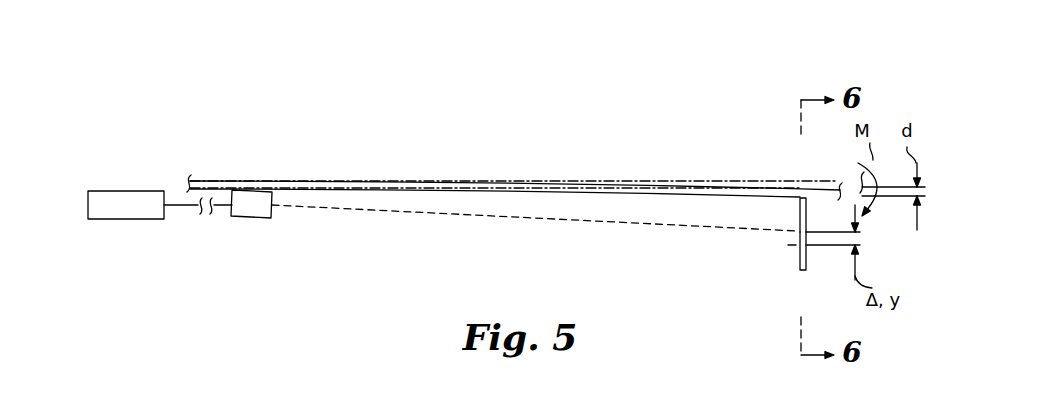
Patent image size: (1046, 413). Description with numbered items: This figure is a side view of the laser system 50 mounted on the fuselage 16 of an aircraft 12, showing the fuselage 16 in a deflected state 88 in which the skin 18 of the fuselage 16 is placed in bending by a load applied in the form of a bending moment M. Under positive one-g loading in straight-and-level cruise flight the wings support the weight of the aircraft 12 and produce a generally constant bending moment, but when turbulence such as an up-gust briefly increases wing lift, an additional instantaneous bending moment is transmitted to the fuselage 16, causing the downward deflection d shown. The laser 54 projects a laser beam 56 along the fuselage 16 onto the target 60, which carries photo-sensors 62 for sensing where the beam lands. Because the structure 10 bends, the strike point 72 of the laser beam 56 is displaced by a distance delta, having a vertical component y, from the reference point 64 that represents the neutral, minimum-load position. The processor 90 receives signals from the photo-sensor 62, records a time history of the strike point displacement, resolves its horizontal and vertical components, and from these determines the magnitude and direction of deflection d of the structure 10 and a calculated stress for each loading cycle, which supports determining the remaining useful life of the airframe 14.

The structure 10 is at (134, 116).
The aircraft 12 is at (556, 162).
The airframe 14 is at (312, 178).
The fuselage 16 is at (622, 182).
The skin 18 is at (516, 180).
The laser system 50 is at (168, 289).
The laser 54 is at (250, 220).
The laser beam 56 is at (440, 222).
The target 60 is at (806, 268).
The photo-sensor 62 is at (798, 209).
The reference point 64 is at (796, 245).
The strike point 72 is at (796, 233).
The deflected state 88 is at (412, 178).
The processor 90 is at (121, 191).